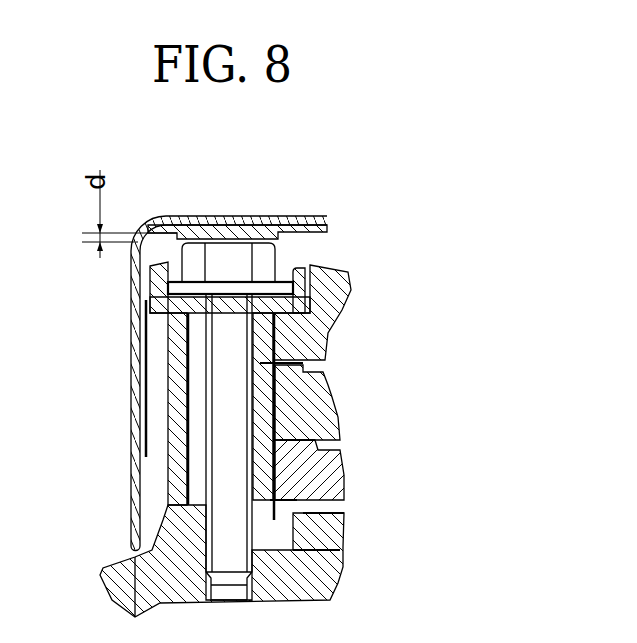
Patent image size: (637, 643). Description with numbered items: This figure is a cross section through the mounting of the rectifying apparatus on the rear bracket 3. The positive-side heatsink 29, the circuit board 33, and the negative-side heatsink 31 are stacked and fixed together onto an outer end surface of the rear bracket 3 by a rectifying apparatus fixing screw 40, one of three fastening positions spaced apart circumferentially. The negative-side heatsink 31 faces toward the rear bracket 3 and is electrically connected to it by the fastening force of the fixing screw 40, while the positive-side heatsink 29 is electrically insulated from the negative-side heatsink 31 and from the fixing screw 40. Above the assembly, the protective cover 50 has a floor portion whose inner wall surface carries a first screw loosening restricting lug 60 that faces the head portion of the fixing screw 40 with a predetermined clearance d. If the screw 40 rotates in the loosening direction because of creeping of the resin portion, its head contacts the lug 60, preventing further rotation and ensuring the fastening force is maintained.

The protective cover 50 is at (174, 217).
The first screw loosening restricting lug 60 is at (222, 237).
The rectifying apparatus fixing screw 40 is at (283, 256).
The positive-side heatsink 29 is at (331, 329).
The circuit board 33 is at (327, 393).
The negative-side heatsink 31 is at (323, 487).
The rear bracket 3 is at (343, 570).